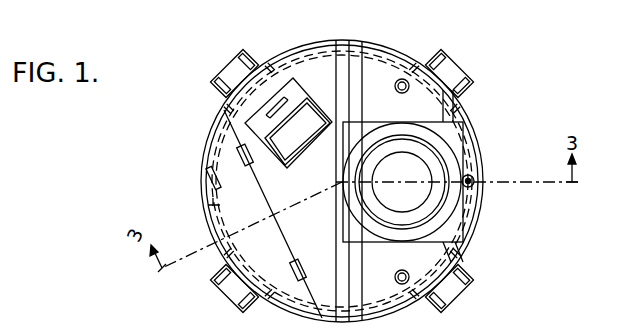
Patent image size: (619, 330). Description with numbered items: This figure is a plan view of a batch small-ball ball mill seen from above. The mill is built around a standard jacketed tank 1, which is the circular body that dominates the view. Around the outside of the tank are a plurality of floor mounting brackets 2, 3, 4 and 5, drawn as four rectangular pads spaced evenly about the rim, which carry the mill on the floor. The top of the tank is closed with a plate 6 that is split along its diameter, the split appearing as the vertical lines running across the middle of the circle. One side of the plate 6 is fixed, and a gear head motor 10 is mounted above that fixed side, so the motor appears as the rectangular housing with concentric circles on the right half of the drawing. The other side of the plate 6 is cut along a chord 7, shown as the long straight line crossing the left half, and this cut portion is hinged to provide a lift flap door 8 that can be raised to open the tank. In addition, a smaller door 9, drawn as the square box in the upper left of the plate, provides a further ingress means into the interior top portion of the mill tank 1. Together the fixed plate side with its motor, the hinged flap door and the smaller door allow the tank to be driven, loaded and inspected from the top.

The jacketed tank 1 is at (463, 121).
The floor mounting bracket 2 is at (230, 300).
The floor mounting bracket 3 is at (455, 303).
The floor mounting bracket 4 is at (441, 52).
The floor mounting bracket 5 is at (236, 55).
The plate 6 is at (314, 42).
The chord 7 is at (265, 197).
The lift flap door 8 is at (221, 205).
The smaller door 9 is at (302, 88).
The gear head motor 10 is at (383, 158).